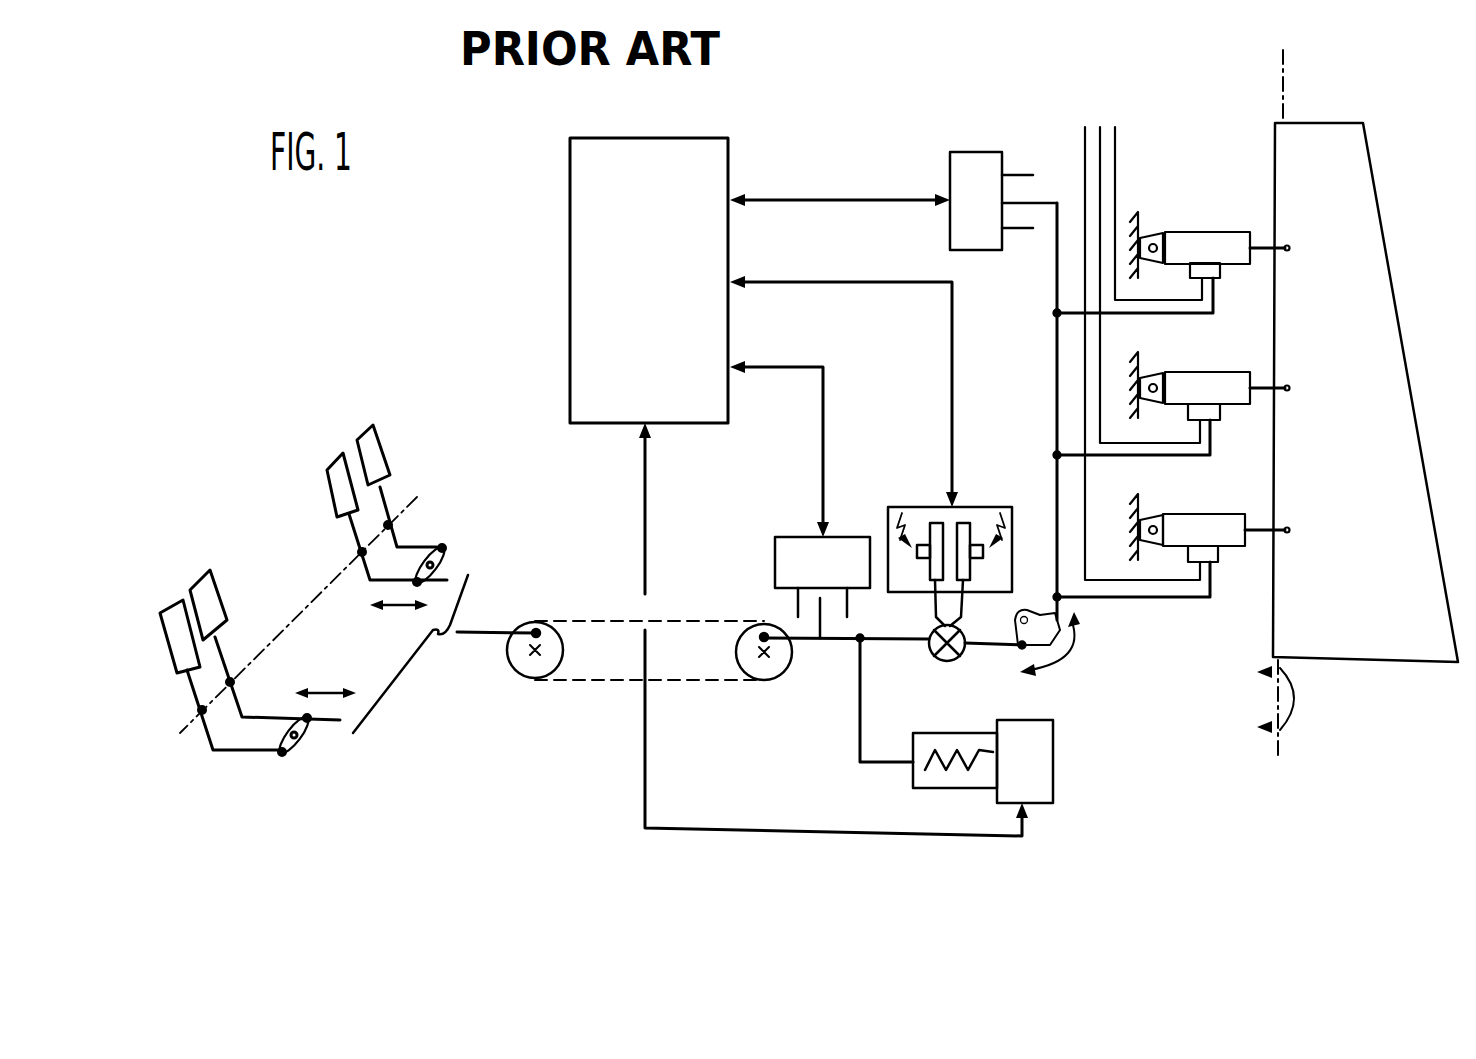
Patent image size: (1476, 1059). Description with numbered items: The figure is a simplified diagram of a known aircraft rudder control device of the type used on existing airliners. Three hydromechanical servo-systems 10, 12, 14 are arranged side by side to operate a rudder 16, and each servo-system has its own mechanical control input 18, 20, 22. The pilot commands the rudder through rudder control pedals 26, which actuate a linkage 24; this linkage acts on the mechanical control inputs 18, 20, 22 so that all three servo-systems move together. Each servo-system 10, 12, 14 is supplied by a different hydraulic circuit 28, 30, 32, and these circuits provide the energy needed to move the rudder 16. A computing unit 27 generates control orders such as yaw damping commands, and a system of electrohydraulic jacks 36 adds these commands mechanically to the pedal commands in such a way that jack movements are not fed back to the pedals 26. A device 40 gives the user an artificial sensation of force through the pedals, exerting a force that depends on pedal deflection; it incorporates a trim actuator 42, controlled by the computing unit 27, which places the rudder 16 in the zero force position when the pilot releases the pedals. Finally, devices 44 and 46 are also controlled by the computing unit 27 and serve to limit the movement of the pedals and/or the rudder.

The servo-system 10 is at (1205, 243).
The servo-system 12 is at (1190, 388).
The servo-system 14 is at (1188, 527).
The rudder 16 is at (1358, 148).
The mechanical control input 18 is at (1218, 270).
The mechanical control input 20 is at (1213, 415).
The mechanical control input 22 is at (1213, 557).
The linkage 24 is at (600, 683).
The rudder control pedals 26 is at (229, 582).
The computing unit 27 is at (580, 313).
The hydraulic circuit 28 is at (1115, 150).
The hydraulic circuit 30 is at (1097, 140).
The hydraulic circuit 32 is at (1083, 157).
The electrohydraulic jacks 36 is at (920, 520).
The artificial force sensation device 40 is at (925, 780).
The trim actuator 42 is at (1047, 762).
The limiting device 44 is at (775, 558).
The limiting device 46 is at (953, 163).